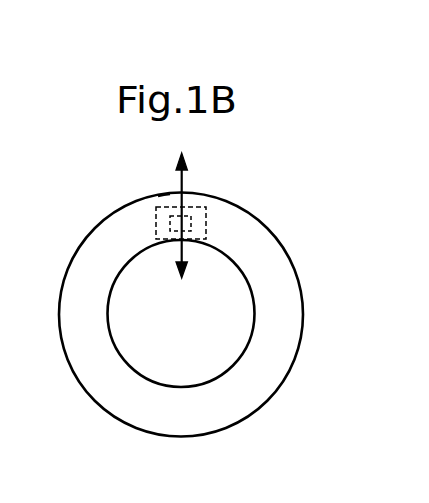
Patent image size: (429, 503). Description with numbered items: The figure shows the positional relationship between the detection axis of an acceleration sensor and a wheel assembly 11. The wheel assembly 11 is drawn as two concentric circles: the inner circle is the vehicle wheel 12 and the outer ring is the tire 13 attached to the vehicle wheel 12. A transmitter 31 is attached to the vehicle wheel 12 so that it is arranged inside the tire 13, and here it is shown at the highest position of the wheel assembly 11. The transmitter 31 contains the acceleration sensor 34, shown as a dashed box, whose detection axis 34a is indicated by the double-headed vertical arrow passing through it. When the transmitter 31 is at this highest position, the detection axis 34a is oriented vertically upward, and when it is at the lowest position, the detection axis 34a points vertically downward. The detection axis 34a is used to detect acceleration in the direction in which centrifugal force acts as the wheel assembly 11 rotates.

The wheel assembly 11 is at (229, 315).
The vehicle wheel 12 is at (245, 273).
The tire 13 is at (302, 297).
The transmitter 31 is at (164, 203).
The acceleration sensor 34 is at (168, 226).
The detection axis 34a is at (182, 178).